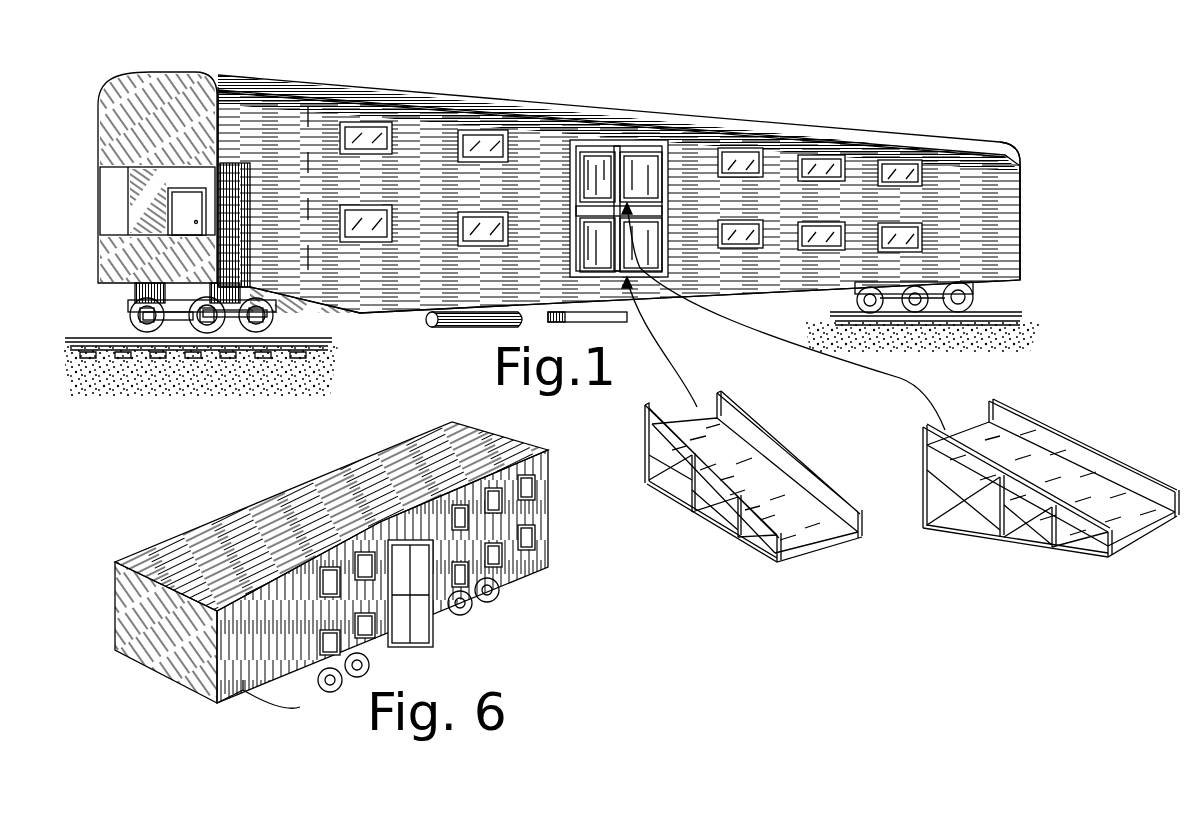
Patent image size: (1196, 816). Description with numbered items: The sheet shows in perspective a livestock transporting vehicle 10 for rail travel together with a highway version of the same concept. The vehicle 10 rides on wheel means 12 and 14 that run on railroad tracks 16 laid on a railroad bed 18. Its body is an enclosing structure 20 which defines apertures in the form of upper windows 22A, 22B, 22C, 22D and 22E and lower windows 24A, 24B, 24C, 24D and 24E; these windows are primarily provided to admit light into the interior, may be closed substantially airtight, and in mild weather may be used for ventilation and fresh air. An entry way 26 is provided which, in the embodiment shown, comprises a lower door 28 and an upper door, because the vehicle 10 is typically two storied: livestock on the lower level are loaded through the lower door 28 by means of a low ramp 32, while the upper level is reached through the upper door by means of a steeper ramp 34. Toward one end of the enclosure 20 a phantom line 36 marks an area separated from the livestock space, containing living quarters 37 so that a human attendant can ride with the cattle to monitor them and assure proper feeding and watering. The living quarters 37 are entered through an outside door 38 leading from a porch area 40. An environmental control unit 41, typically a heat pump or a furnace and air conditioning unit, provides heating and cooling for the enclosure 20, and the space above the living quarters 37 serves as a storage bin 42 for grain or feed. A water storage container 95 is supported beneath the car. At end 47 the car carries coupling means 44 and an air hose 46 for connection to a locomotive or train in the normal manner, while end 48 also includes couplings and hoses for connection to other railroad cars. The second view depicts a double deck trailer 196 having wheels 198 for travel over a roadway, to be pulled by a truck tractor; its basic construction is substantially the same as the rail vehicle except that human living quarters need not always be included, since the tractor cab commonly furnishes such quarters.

In FIG. 1, the vehicle 10 is at (563, 165).
In FIG. 1, the wheel means 12 is at (160, 345).
In FIG. 1, the wheel means 14 is at (973, 315).
In FIG. 1, the railroad tracks 16 is at (558, 335).
In FIG. 1, the railroad bed 18 is at (100, 375).
In FIG. 1, the enclosing structure 20 is at (553, 128).
In FIG. 1, the upper window 22A is at (363, 135).
In FIG. 1, the upper window 22B is at (490, 134).
In FIG. 1, the upper window 22C is at (742, 153).
In FIG. 1, the upper window 22D is at (827, 157).
In FIG. 1, the upper window 22E is at (910, 170).
In FIG. 1, the lower window 24A is at (373, 231).
In FIG. 1, the lower window 24B is at (480, 235).
In FIG. 1, the lower window 24C is at (737, 240).
In FIG. 1, the lower window 24D is at (807, 234).
In FIG. 1, the lower window 24E is at (913, 238).
In FIG. 1, the entry way 26 is at (604, 169).
In FIG. 1, the lower door 28 is at (597, 253).
In FIG. 1, the low ramp 32 is at (777, 447).
In FIG. 1, the steeper ramp 34 is at (1053, 433).
In FIG. 1, the phantom line 36 is at (308, 172).
In FIG. 1, the living quarters 37 is at (282, 216).
In FIG. 1, the outside door 38 is at (187, 193).
In FIG. 1, the porch area 40 is at (110, 203).
In FIG. 1, the environmental control unit 41 is at (598, 325).
In FIG. 1, the storage bin 42 is at (113, 102).
In FIG. 1, the coupling means 44 is at (133, 293).
In FIG. 1, the air hose 46 is at (176, 330).
In FIG. 1, the end 47 is at (140, 156).
In FIG. 1, the end 48 is at (1028, 142).
In FIG. 1, the water storage container 95 is at (452, 328).
In FIG. 6, the double deck trailer 196 is at (363, 565).
In FIG. 6, the wheels 198 is at (495, 586).